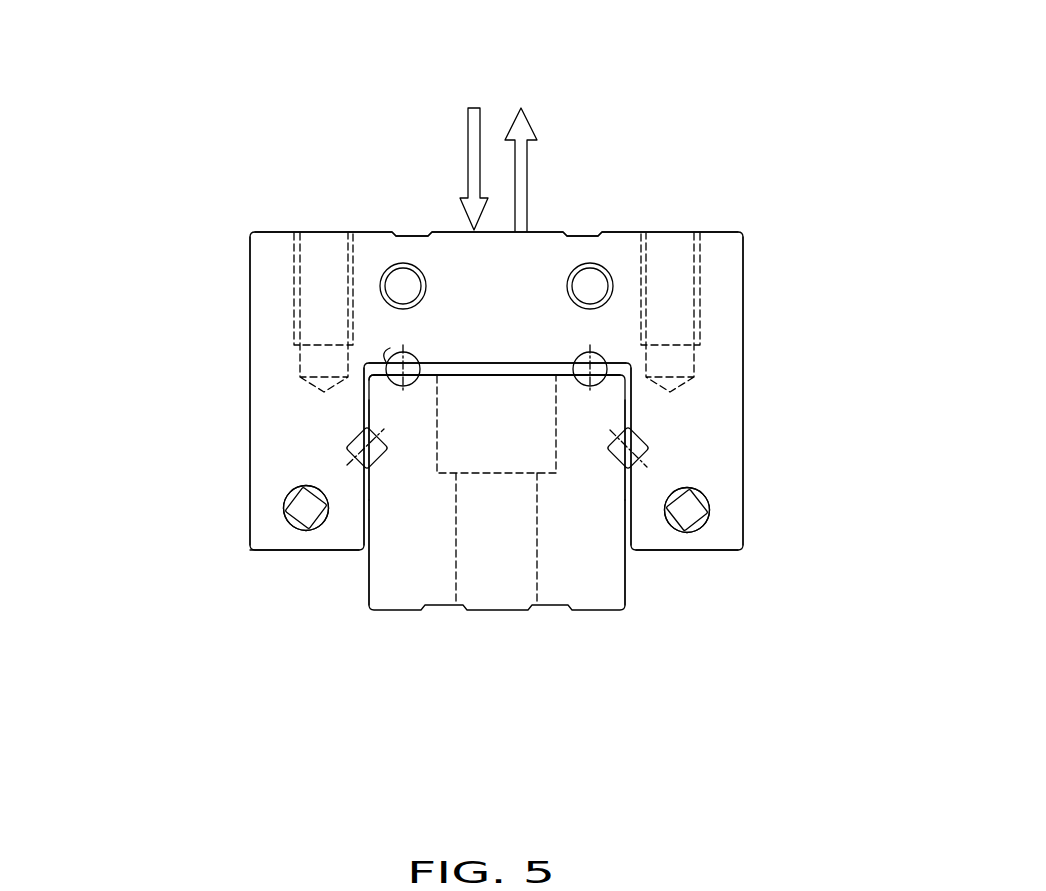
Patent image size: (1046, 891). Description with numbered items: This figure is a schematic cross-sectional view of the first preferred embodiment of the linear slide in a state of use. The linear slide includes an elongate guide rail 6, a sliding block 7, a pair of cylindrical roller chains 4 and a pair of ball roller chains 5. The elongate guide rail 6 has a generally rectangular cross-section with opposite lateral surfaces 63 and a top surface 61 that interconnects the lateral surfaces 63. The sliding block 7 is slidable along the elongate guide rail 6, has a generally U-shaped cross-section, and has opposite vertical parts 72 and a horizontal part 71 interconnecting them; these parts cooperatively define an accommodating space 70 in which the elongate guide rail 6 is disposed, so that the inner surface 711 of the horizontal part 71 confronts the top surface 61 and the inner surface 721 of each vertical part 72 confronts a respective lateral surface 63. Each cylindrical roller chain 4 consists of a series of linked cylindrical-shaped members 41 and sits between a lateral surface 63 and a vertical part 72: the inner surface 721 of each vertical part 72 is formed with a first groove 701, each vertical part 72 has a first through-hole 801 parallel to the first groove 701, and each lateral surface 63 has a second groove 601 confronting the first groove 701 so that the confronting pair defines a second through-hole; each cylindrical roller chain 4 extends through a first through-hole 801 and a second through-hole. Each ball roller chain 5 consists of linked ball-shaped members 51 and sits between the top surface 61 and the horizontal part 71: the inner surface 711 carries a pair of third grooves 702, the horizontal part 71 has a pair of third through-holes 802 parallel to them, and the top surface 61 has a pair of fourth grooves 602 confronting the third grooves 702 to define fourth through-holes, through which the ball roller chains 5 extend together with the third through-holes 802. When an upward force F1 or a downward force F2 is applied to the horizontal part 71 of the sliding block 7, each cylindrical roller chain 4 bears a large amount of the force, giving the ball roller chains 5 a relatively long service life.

The sliding block 7 is at (747, 272).
The horizontal part 71 is at (520, 272).
The inner surface 711 is at (542, 363).
The vertical parts 72 is at (723, 337).
The inner surface 721 is at (631, 395).
The first groove 701 is at (350, 450).
The third grooves 702 is at (390, 348).
The ball roller chains 5 is at (397, 293).
The ball-shaped members 51 is at (403, 285).
The elongate guide rail 6 is at (597, 632).
The top surface 61 is at (495, 375).
The second groove 601 is at (360, 418).
The fourth grooves 602 is at (387, 387).
The lateral surfaces 63 is at (368, 560).
The accommodating space 70 is at (513, 367).
The cylindrical roller chains 4 is at (273, 517).
The cylindrical-shaped members 41 is at (368, 468).
The first through-hole 801 is at (293, 507).
The third through-holes 802 is at (407, 263).
The upward force F1 is at (530, 125).
The downward force F2 is at (467, 132).